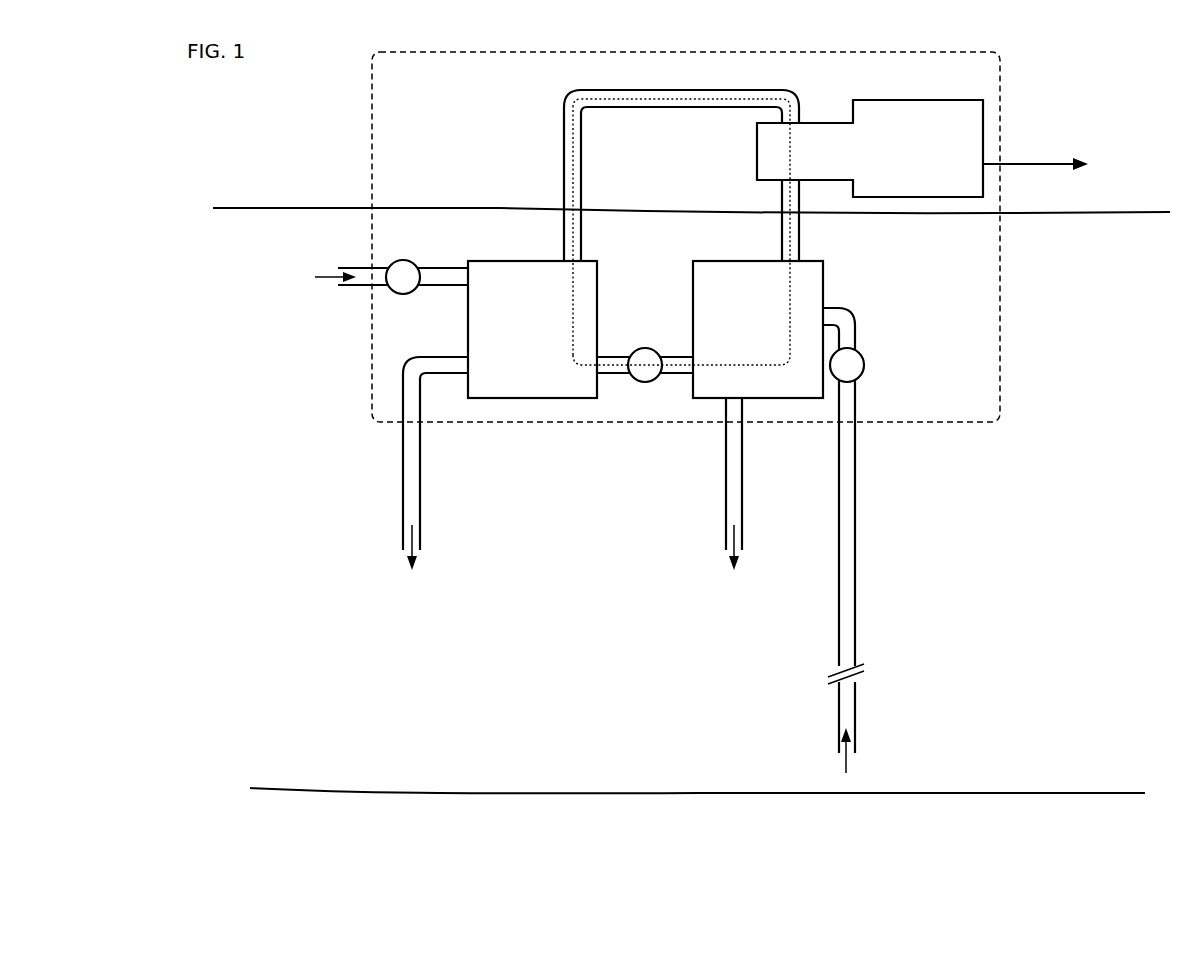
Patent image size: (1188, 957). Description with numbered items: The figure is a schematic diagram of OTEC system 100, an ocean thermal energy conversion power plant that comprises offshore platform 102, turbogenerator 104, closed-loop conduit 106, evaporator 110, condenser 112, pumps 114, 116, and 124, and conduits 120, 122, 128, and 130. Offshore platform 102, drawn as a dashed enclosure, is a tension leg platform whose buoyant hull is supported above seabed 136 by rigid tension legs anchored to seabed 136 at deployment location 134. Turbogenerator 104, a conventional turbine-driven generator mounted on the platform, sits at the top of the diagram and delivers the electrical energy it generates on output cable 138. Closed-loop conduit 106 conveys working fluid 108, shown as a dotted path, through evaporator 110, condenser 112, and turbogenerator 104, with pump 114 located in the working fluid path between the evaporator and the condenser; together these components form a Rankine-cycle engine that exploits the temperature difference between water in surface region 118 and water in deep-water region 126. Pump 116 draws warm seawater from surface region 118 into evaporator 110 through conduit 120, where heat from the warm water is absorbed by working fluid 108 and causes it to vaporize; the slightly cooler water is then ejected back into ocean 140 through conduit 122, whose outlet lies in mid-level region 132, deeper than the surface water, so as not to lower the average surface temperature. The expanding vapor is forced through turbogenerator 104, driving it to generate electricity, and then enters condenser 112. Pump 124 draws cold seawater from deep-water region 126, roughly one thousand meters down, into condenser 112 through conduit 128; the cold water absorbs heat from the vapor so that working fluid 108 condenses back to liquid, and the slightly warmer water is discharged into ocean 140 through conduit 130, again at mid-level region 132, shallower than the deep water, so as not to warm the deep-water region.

The OTEC system 100 is at (306, 107).
The offshore platform 102 is at (1001, 333).
The turbogenerator 104 is at (928, 100).
The closed-loop conduit 106 is at (564, 187).
The working fluid 108 is at (578, 131).
The evaporator 110 is at (546, 335).
The condenser 112 is at (772, 335).
The pump 114 is at (645, 348).
The pump 116 is at (418, 245).
The surface region 118 is at (345, 239).
The conduit 120 is at (353, 288).
The conduit 122 is at (403, 455).
The pump 124 is at (866, 372).
The deep-water region 126 is at (1132, 676).
The conduit 128 is at (858, 703).
The conduit 130 is at (725, 453).
The mid-level region 132 is at (635, 544).
The deployment location 134 is at (741, 722).
The seabed 136 is at (1130, 829).
The output cable 138 is at (1022, 163).
The ocean 140 is at (1142, 462).